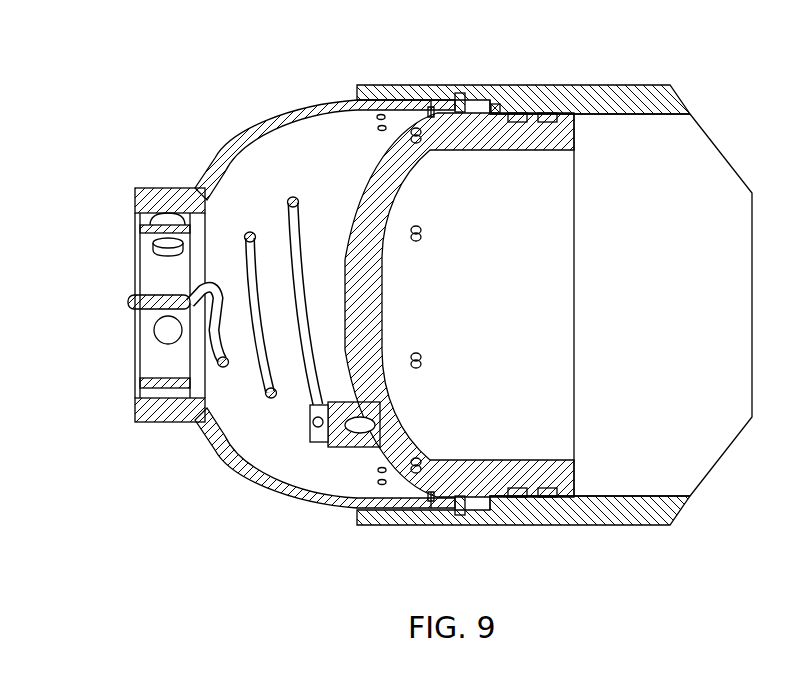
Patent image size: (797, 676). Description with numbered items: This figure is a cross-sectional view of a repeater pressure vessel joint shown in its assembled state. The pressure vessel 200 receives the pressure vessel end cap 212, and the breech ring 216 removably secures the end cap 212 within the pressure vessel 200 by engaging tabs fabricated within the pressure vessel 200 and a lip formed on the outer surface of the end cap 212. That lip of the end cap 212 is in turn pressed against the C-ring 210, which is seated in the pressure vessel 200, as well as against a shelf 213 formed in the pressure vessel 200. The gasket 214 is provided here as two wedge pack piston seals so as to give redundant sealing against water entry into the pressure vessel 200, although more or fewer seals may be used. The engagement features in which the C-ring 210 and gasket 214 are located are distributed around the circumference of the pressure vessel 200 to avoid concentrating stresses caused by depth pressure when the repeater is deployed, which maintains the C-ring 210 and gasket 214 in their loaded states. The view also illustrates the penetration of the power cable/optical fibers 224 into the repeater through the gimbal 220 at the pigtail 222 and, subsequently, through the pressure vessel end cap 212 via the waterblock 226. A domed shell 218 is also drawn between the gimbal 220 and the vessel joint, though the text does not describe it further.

The pressure vessel 200 is at (635, 85).
The C-ring 210 is at (500, 90).
The pressure vessel end cap 212 is at (437, 178).
The shelf 213 is at (494, 98).
The gasket 214 is at (538, 504).
The breech ring 216 is at (452, 94).
The dome shell 218 is at (222, 152).
The gimbal 220 is at (124, 380).
The pigtail 222 is at (123, 299).
The power cable/optical fibers 224 is at (303, 232).
The waterblock 226 is at (316, 455).